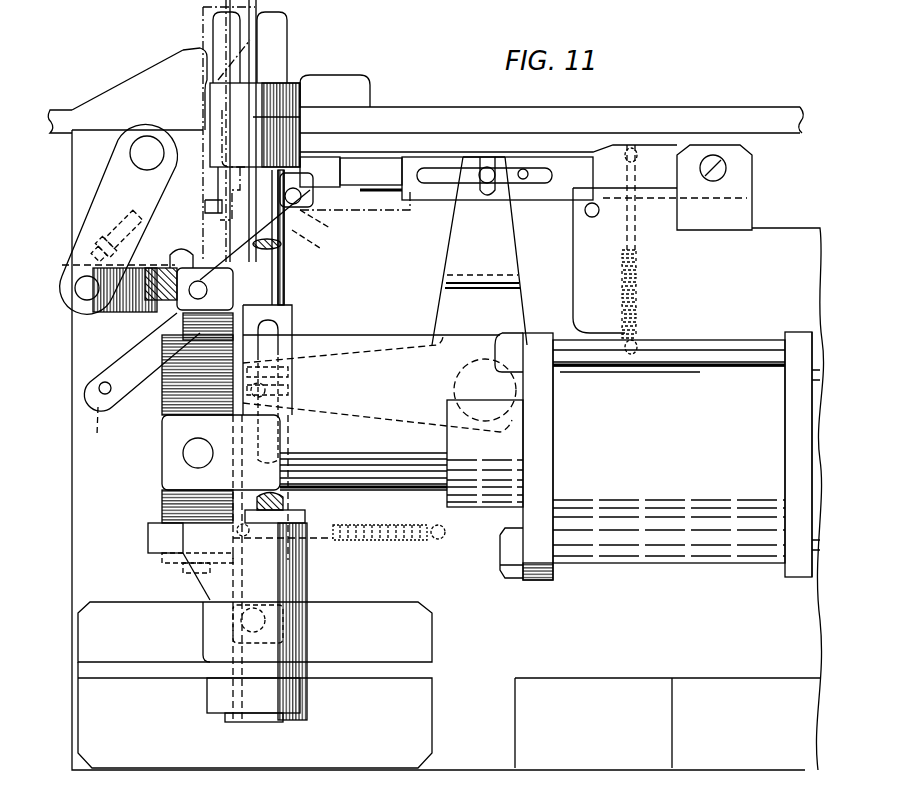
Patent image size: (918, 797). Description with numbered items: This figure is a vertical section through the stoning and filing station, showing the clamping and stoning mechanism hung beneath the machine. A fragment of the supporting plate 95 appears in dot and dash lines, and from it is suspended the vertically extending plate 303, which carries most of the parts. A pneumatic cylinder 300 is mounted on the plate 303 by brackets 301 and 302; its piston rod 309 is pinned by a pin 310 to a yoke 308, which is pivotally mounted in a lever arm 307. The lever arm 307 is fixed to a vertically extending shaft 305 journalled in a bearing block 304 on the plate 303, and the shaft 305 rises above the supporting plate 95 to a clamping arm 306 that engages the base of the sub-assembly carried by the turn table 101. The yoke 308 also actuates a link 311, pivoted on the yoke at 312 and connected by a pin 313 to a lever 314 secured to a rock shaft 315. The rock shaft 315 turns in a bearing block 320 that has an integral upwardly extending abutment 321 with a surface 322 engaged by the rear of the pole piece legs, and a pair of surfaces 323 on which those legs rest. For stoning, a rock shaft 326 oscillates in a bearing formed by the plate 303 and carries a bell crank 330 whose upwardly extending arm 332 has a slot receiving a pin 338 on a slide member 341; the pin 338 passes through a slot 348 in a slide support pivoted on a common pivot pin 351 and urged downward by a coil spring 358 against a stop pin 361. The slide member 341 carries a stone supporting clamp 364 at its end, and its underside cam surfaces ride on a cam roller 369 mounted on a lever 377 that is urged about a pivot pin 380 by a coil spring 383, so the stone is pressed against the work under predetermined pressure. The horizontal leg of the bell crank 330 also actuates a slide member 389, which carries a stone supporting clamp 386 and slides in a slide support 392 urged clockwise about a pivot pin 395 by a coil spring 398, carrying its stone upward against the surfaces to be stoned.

The turn table 101 is at (725, 125).
The pneumatic cylinder 300 is at (625, 535).
The bracket 301 is at (786, 578).
The bracket 302 is at (528, 572).
The vertically extending plate 303 is at (783, 246).
The bearing block 304 is at (420, 648).
The vertically extending shaft 305 is at (280, 513).
The clamping arm 306 is at (267, 103).
The lever arm 307 is at (157, 540).
The yoke 308 is at (176, 505).
The piston rod 309 is at (375, 480).
The pin 310 is at (194, 453).
The link 311 is at (135, 300).
The pivot 312 is at (148, 312).
The pin 313 is at (87, 300).
The lever 314 is at (108, 174).
The rock shaft 315 is at (147, 136).
The bearing block 320 is at (70, 130).
The abutment 321 is at (152, 76).
The surface 322 is at (205, 50).
The surfaces 323 is at (215, 130).
The rock shaft 326 is at (466, 388).
The bell crank 330 is at (457, 318).
The arm 332 is at (463, 245).
The pin 338 is at (486, 168).
The slide member 341 is at (370, 170).
The slot 348 is at (527, 170).
The pivot pin 351 is at (725, 172).
The coil spring 358 is at (640, 288).
The stop pin 361 is at (585, 212).
The stone supporting clamp 364 is at (315, 165).
The cam roller 369 is at (310, 215).
The lever 377 is at (133, 372).
The pivot pin 380 is at (106, 431).
The coil spring 383 is at (160, 262).
The stone supporting clamp 386 is at (326, 236).
The slide member 389 is at (281, 286).
The slide support 392 is at (285, 318).
The pivot pin 395 is at (241, 617).
The coil spring 398 is at (392, 541).
The supporting plate 95 is at (380, 214).